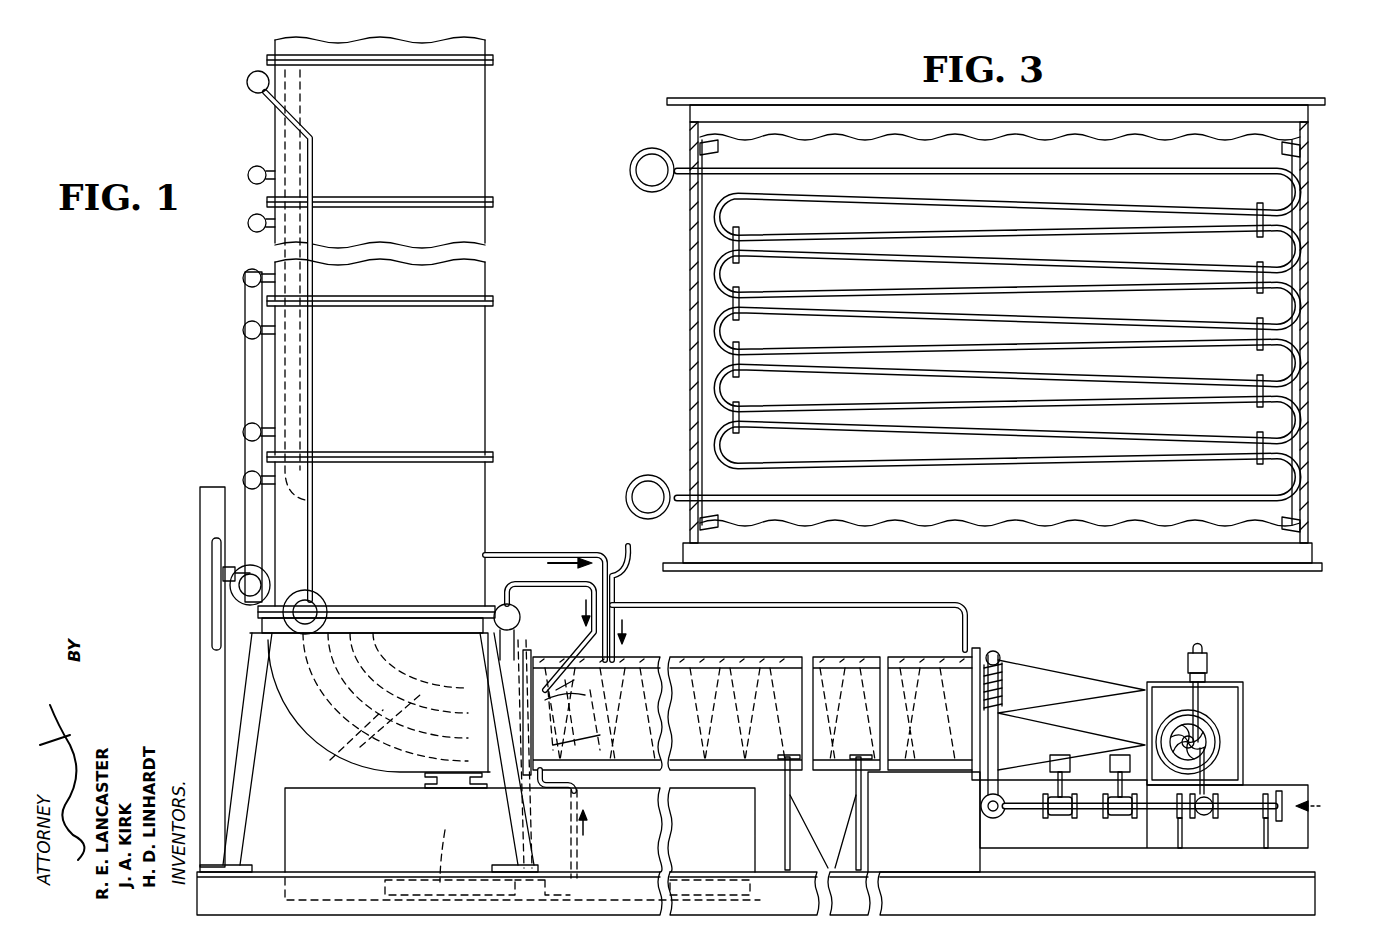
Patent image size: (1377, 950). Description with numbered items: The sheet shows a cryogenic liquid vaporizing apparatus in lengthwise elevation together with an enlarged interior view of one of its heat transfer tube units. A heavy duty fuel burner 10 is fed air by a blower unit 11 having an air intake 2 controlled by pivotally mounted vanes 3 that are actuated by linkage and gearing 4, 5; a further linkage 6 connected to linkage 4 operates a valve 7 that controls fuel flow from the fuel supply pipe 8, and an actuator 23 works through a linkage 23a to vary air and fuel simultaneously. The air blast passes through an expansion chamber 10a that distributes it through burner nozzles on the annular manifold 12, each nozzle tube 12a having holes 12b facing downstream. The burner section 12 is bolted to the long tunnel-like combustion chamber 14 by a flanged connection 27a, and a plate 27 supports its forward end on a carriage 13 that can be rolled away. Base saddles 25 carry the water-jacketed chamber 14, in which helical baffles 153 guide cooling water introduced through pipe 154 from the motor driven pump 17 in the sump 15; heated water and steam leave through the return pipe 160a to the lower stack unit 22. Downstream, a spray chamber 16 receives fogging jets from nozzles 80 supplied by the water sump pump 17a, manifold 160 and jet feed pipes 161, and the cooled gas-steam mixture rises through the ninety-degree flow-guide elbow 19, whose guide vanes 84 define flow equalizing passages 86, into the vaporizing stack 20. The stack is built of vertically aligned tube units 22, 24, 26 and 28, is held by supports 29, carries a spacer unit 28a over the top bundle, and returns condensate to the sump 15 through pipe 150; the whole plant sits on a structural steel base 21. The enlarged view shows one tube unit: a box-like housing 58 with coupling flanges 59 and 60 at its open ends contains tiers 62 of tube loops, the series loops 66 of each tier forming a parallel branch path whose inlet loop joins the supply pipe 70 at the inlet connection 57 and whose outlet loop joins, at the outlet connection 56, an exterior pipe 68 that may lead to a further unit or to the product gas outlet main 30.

In FIG. 1, the air intake 2 is at (1216, 732).
In FIG. 1, the pivotally mounted vanes 3 is at (1198, 744).
In FIG. 1, the linkage and gearing 4 is at (1205, 750).
In FIG. 1, the linkage and gearing 5 is at (1188, 724).
In FIG. 1, the further linkage 6 is at (1202, 773).
In FIG. 1, the valve 7 is at (1205, 815).
In FIG. 1, the fuel supply pipe 8 is at (1030, 810).
In FIG. 1, the fuel burner 10 is at (1092, 655).
In FIG. 1, the expansion chamber 10a is at (1106, 725).
In FIG. 1, the blower unit 11 is at (1248, 700).
In FIG. 1, the annular manifold 12 is at (994, 744).
In FIG. 1, the burner nozzle tube 12a is at (998, 657).
In FIG. 1, the holes 12b is at (1000, 691).
In FIG. 1, the carriage 13 is at (1095, 872).
In FIG. 1, the combustion chamber 14 is at (848, 658).
In FIG. 1, the sump 15 is at (378, 861).
In FIG. 1, the spray chamber 16 is at (640, 665).
In FIG. 1, the motor driven pump 17 is at (768, 898).
In FIG. 1, the water sump pump 17a is at (452, 828).
In FIG. 1, the flow-guide elbow 19 is at (400, 681).
In FIG. 1, the vaporizing stack 20 is at (492, 345).
In FIG. 1, the structural steel base 21 is at (1278, 907).
In FIG. 1, the lower stack unit 22 is at (453, 516).
In FIG. 1, the actuator 23 is at (1208, 655).
In FIG. 1, the linkage 23a is at (1198, 680).
In FIG. 1, the heat transfer tube unit 24 is at (458, 387).
In FIG. 3, the heat transfer tube unit 24 is at (1300, 478).
In FIG. 1, the base saddles 25 is at (860, 795).
In FIG. 1, the heat transfer tube unit 26 is at (481, 276).
In FIG. 1, the plate 27 is at (977, 816).
In FIG. 1, the flanged connection 27a is at (975, 775).
In FIG. 1, the heat transfer tube unit 28 is at (483, 158).
In FIG. 1, the spacer unit 28a is at (490, 52).
In FIG. 1, the supports 29 is at (250, 742).
In FIG. 1, the product gas outlet main 30 is at (303, 145).
In FIG. 3, the outlet connection 56 is at (686, 192).
In FIG. 3, the inlet connection 57 is at (680, 490).
In FIG. 3, the housing 58 is at (1304, 126).
In FIG. 3, the coupling flange 59 is at (1264, 100).
In FIG. 3, the coupling flange 60 is at (1218, 572).
In FIG. 3, the tiers of tube loops 62 is at (988, 167).
In FIG. 3, the series loops 66 is at (1268, 215).
In FIG. 3, the exterior pipe 68 is at (640, 187).
In FIG. 3, the supply pipe 70 is at (638, 484).
In FIG. 1, the nozzles 80 is at (555, 654).
In FIG. 1, the guide vanes 84 is at (335, 753).
In FIG. 1, the flow equalizing passages 86 is at (340, 637).
In FIG. 1, the pipe 150 is at (425, 778).
In FIG. 1, the helical baffles 153 is at (705, 662).
In FIG. 1, the pipe 154 is at (573, 782).
In FIG. 1, the manifold 160 is at (555, 598).
In FIG. 1, the return pipe 160a is at (968, 610).
In FIG. 1, the jet feed pipes 161 is at (606, 598).